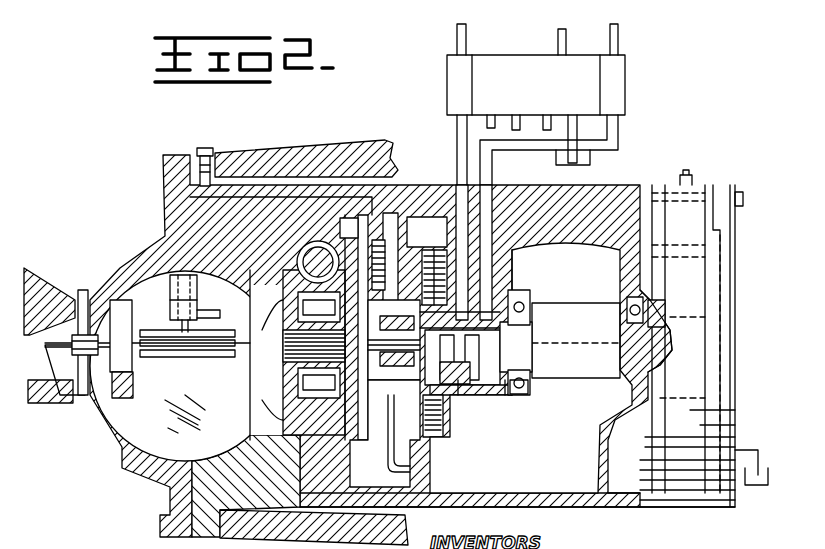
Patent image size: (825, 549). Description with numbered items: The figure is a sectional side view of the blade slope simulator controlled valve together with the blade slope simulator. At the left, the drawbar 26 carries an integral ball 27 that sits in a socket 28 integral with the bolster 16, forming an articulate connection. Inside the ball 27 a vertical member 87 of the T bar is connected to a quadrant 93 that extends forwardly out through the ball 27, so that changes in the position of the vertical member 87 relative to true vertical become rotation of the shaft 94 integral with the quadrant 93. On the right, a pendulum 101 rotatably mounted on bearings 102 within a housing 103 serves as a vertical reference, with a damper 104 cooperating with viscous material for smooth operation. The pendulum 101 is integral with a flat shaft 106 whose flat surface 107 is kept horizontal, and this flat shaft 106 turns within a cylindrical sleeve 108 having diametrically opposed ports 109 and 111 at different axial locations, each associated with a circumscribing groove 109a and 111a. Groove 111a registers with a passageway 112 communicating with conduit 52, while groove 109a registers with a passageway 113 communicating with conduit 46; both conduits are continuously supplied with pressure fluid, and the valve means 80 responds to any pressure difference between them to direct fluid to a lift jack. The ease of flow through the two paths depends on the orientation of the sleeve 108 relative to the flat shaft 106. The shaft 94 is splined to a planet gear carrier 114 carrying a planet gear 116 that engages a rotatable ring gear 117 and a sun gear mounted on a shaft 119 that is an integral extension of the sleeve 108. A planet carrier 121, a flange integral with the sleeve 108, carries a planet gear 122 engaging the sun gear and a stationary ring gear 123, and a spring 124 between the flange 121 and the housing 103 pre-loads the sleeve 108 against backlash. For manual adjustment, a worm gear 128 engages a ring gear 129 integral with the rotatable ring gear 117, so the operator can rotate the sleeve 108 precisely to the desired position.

The bolster 16 is at (282, 153).
The drawbar 26 is at (53, 284).
The ball 27 is at (108, 262).
The socket 28 is at (172, 214).
The conduit 46 is at (456, 141).
The conduit 52 is at (619, 136).
The valve means 80 is at (626, 68).
The vertical member 87 is at (172, 291).
The quadrant 93 is at (249, 300).
The shaft 94 is at (262, 376).
The pendulum 101 is at (575, 454).
The bearings 102 is at (628, 298).
The housing 103 is at (590, 508).
The damper 104 is at (660, 322).
The flat shaft 106 is at (450, 360).
The flat surface 107 is at (455, 338).
The cylindrical sleeve 108 is at (528, 392).
The port 109 is at (455, 312).
The groove 109a is at (462, 393).
The port 111 is at (500, 338).
The groove 111a is at (508, 393).
The passageway 112 is at (507, 262).
The passageway 113 is at (455, 186).
The planet gear carrier 114 is at (289, 447).
The planet gear 116 is at (400, 488).
The rotatable ring gear 117 is at (293, 232).
The shaft 119 is at (394, 340).
The planet carrier 121 is at (445, 248).
The planet gear 122 is at (405, 438).
The stationary ring gear 123 is at (405, 455).
The spring 124 is at (445, 430).
The worm gear 128 is at (297, 250).
The ring gear 129 is at (258, 448).